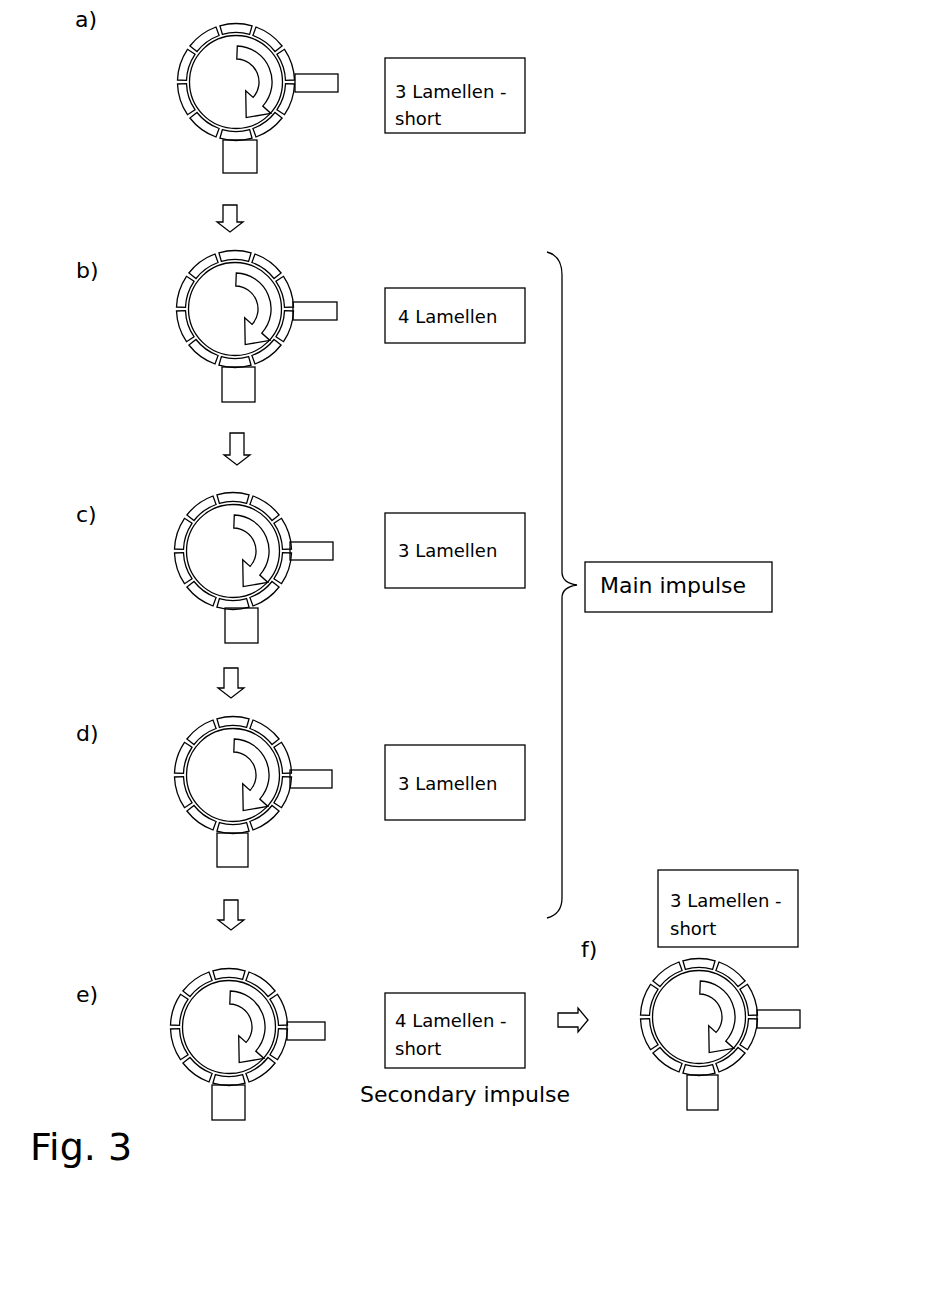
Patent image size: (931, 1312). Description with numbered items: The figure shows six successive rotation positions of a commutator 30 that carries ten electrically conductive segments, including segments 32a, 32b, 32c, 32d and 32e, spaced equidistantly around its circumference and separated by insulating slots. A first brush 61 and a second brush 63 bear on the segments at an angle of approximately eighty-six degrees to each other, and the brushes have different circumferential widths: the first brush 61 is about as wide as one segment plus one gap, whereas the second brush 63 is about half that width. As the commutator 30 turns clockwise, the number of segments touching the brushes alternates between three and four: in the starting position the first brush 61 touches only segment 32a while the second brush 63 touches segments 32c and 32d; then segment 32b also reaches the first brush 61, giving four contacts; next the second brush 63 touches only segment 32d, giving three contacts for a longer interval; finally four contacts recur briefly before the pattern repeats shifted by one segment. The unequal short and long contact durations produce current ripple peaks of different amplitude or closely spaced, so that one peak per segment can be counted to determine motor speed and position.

The commutator 30 is at (458, 553).
The segment 32a is at (411, 634).
The segment 32b is at (499, 621).
The segment 32c is at (544, 592).
The segment 32d is at (547, 537).
The segment 32e is at (786, 984).
The first brush 61 is at (427, 649).
The second brush 63 is at (558, 539).